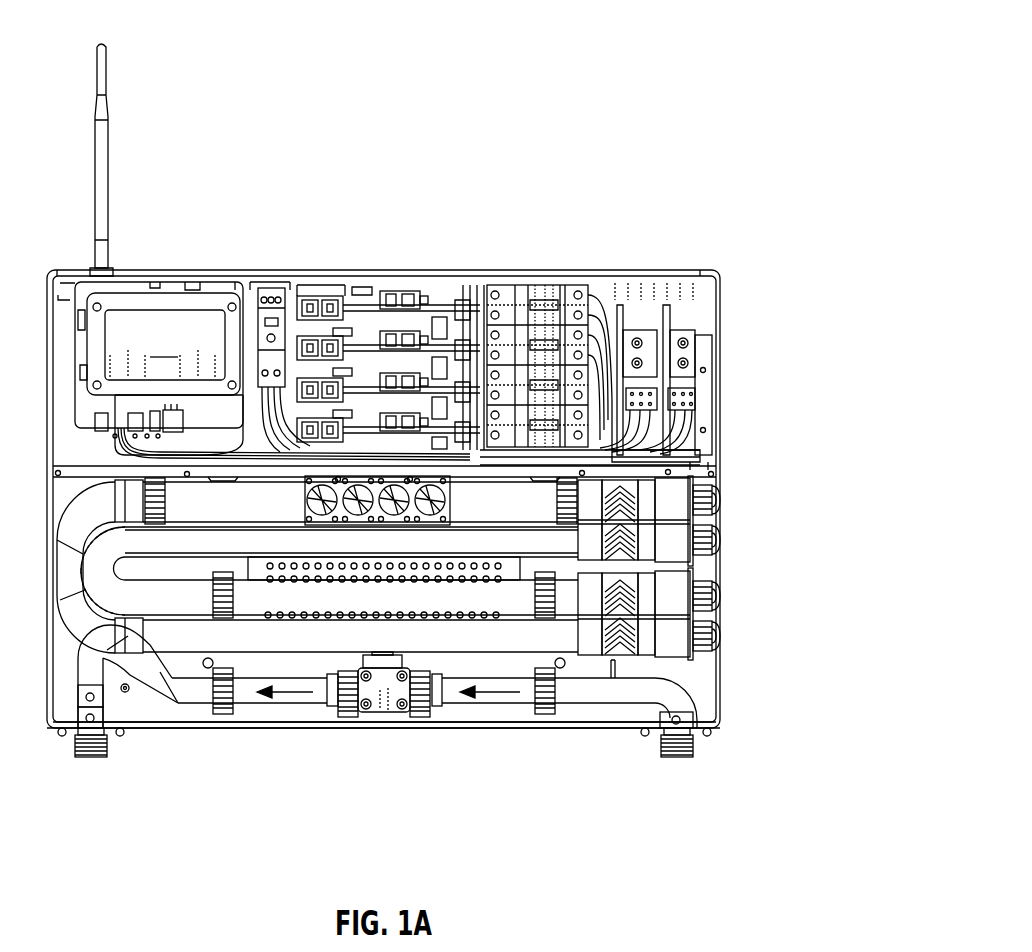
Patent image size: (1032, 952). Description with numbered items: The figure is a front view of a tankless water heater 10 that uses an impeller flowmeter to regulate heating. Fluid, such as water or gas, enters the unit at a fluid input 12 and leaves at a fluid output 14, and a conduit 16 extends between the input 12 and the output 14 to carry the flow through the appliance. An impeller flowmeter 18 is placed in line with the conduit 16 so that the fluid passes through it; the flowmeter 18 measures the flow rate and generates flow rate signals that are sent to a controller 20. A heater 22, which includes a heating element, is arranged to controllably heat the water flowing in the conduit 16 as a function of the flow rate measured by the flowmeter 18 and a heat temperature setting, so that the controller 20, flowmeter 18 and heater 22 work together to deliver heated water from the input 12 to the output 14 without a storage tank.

The tankless water heater 10 is at (633, 32).
The fluid input 12 is at (675, 758).
The fluid output 14 is at (90, 758).
The conduit 16 is at (277, 704).
The impeller flowmeter 18 is at (385, 713).
The controller 20 is at (264, 371).
The heater 22 is at (720, 500).